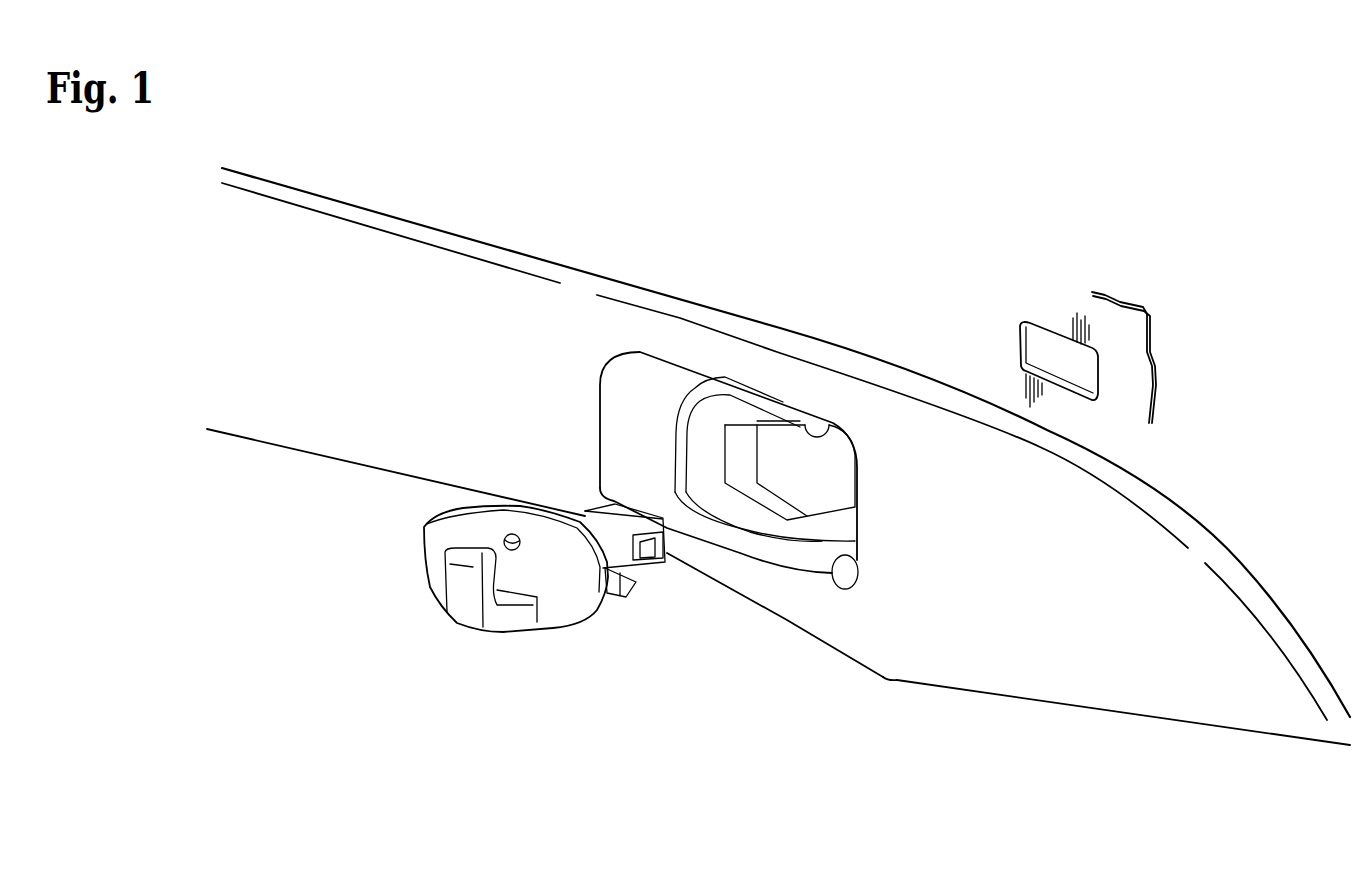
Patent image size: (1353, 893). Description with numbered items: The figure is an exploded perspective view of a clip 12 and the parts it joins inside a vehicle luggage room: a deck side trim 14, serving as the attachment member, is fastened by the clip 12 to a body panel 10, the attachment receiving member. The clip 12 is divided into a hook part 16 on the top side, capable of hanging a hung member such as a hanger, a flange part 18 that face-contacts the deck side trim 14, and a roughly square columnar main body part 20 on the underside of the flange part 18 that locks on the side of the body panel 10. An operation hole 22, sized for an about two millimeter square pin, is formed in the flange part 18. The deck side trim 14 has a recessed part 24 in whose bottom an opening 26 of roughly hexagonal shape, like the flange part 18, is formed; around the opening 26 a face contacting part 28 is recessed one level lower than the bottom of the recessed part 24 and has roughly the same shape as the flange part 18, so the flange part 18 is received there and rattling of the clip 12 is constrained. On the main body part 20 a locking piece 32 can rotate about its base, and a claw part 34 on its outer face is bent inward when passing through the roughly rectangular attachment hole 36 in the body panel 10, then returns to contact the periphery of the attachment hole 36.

The body panel 10 is at (1137, 374).
The clip 12 is at (564, 578).
The deck side trim 14 is at (995, 675).
The hook part 16 is at (462, 617).
The flange part 18 is at (563, 617).
The main body part 20 is at (607, 511).
The operation hole 22 is at (504, 537).
The recessed part 24 is at (832, 572).
The opening 26 is at (830, 440).
The face contacting part 28 is at (740, 410).
The locking piece 32 is at (668, 551).
The claw part 34 is at (657, 562).
The attachment hole 36 is at (1023, 342).